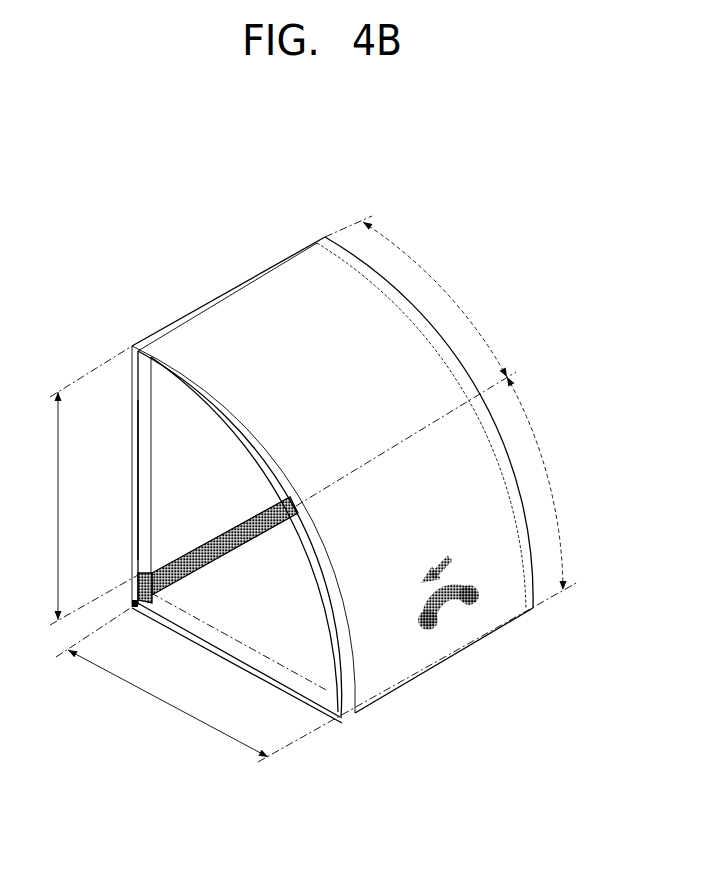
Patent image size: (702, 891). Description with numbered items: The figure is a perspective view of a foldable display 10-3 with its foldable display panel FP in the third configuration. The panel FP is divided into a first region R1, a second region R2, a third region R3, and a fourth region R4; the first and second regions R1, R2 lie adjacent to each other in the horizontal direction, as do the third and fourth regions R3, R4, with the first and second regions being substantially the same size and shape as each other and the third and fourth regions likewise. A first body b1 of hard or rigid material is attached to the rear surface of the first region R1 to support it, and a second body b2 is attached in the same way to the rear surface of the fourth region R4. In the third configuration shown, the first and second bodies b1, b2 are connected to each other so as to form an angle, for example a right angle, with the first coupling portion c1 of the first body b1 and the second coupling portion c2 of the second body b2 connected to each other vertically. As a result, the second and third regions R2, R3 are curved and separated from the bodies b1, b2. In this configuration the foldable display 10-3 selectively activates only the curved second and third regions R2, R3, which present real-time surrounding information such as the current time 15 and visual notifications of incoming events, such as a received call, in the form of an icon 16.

The foldable display 10-3 is at (303, 421).
The foldable display panel FP is at (172, 353).
The current time 15 is at (398, 412).
The icon 16 is at (432, 622).
The first region R1 is at (85, 485).
The second region R2 is at (417, 297).
The third region R3 is at (543, 482).
The fourth region R4 is at (317, 672).
The first body b1 is at (140, 470).
The second body b2 is at (244, 655).
The first coupling portion c1 is at (136, 574).
The second coupling portion c2 is at (136, 609).